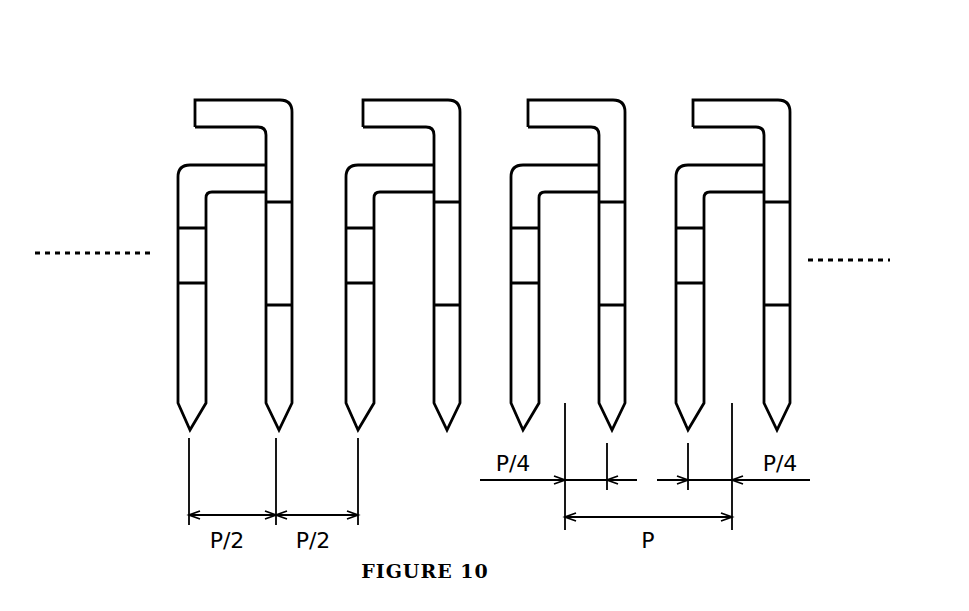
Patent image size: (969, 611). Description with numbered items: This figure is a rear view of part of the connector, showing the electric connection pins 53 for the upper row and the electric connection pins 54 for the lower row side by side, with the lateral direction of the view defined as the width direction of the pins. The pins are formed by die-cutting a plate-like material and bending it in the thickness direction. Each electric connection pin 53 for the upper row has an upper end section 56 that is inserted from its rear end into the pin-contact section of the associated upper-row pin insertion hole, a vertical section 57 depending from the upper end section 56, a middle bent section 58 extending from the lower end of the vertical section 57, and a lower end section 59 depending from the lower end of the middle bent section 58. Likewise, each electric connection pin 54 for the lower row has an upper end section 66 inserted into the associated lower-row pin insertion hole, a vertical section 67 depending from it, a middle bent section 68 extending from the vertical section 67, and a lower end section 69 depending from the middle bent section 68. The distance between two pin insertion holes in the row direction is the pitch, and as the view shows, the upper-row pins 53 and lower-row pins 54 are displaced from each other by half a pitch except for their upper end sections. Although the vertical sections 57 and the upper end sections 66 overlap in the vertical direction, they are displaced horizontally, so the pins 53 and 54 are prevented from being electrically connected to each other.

The electric connection pin for the upper row 53 is at (444, 268).
The electric connection pin for the lower row 54 is at (181, 168).
The upper end section 56 is at (416, 113).
The vertical section 57 is at (452, 147).
The middle bent section 58 is at (448, 275).
The lower end section 59 is at (440, 400).
The upper end section 66 is at (237, 182).
The vertical section 67 is at (193, 207).
The middle bent section 68 is at (193, 260).
The lower end section 69 is at (190, 386).